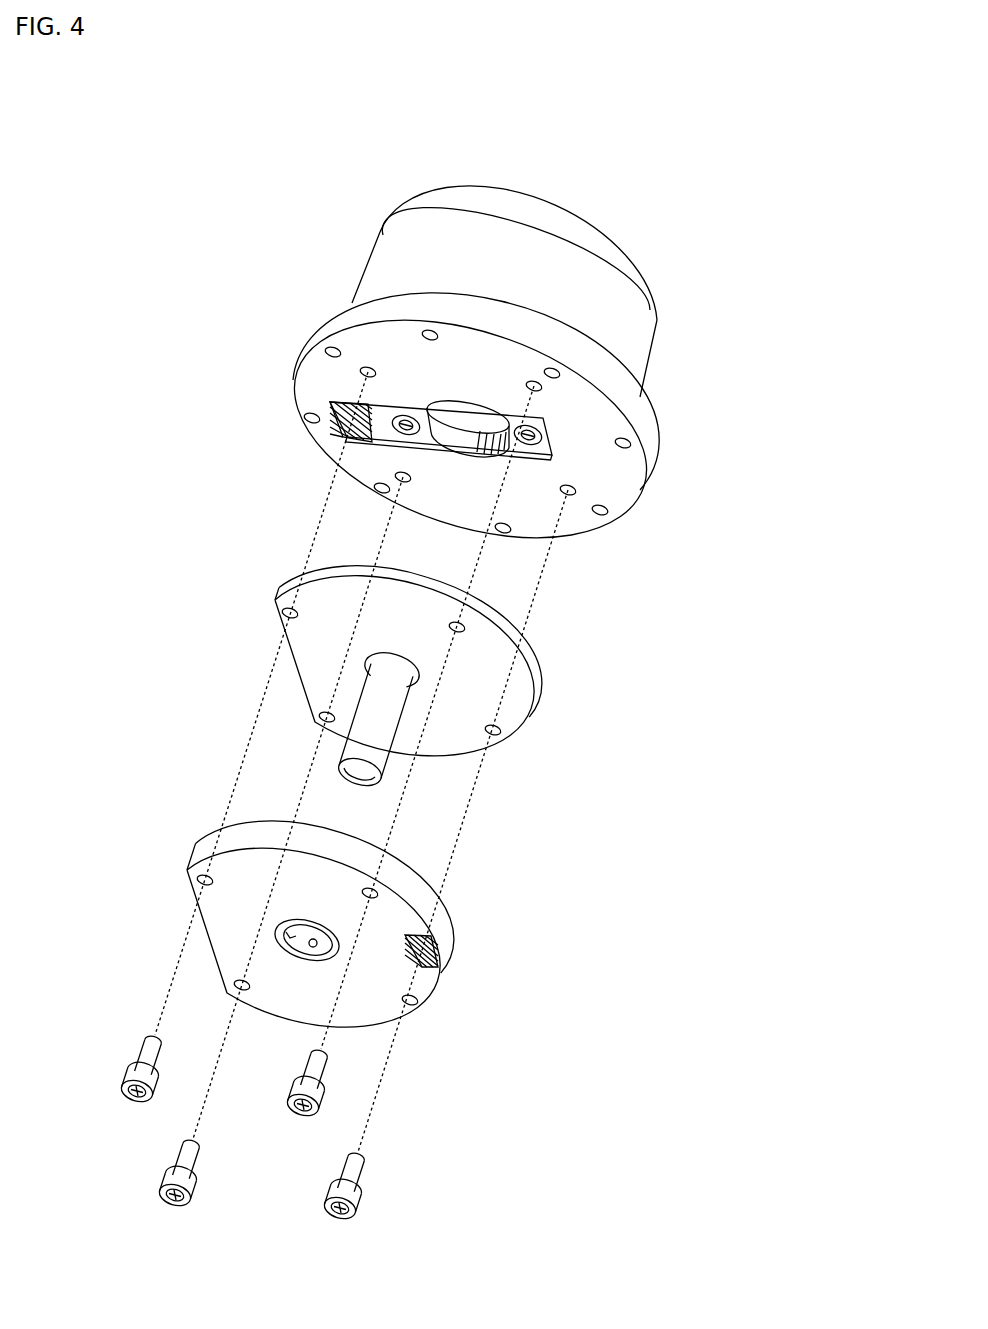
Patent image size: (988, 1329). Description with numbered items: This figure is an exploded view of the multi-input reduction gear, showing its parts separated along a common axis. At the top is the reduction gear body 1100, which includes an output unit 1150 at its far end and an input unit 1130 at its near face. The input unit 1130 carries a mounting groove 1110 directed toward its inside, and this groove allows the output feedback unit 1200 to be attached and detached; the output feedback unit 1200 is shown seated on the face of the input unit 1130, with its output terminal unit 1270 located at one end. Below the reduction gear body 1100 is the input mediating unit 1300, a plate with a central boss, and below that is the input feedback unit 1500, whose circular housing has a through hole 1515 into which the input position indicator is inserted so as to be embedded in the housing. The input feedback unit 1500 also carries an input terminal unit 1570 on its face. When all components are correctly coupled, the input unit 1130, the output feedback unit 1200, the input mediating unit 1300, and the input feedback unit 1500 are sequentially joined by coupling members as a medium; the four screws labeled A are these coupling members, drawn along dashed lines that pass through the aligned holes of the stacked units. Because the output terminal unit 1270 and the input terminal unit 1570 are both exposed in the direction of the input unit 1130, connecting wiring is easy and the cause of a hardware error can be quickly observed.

The reduction gear body 1100 is at (633, 347).
The mounting groove 1110 is at (560, 446).
The input unit 1130 is at (323, 460).
The output unit 1150 is at (558, 202).
The output feedback unit 1200 is at (412, 400).
The output terminal unit 1270 is at (338, 432).
The input mediating unit 1300 is at (541, 672).
The input feedback unit 1500 is at (459, 933).
The through hole 1515 is at (275, 948).
The input terminal unit 1570 is at (423, 968).
The fastening screws A is at (357, 1213).